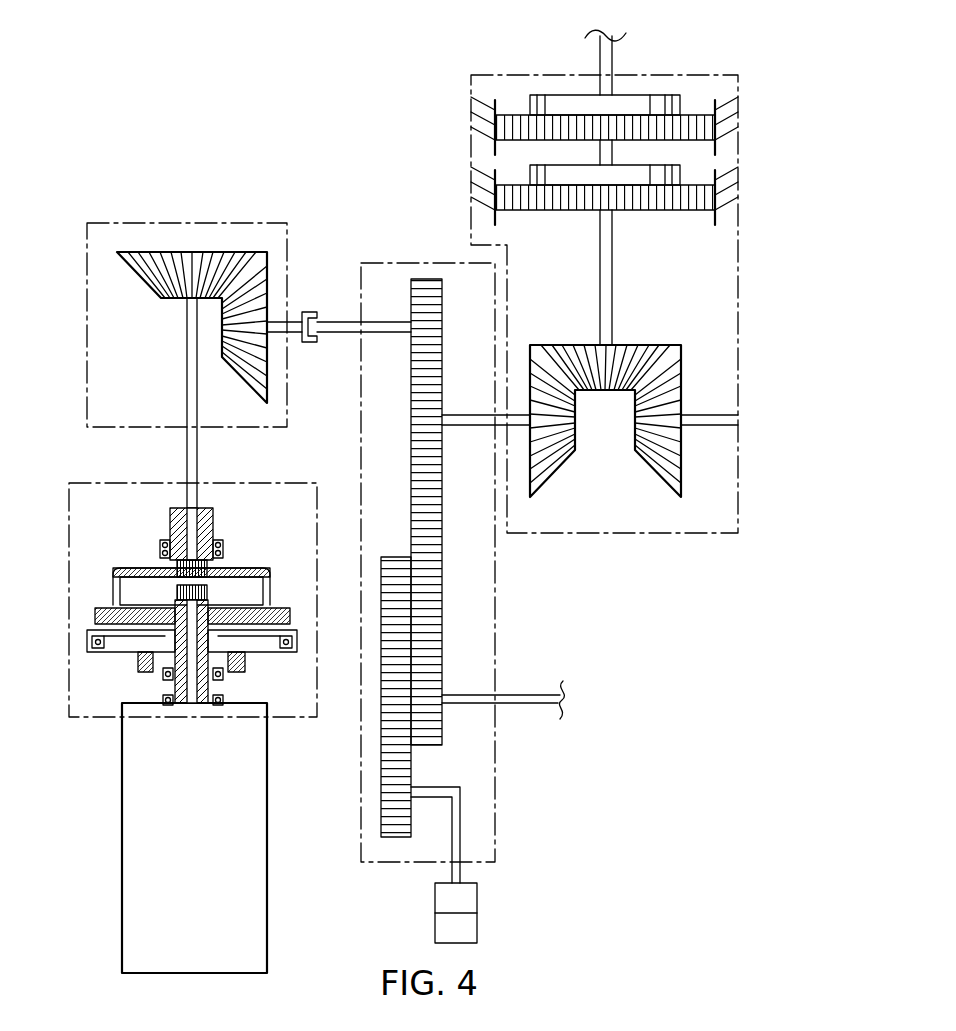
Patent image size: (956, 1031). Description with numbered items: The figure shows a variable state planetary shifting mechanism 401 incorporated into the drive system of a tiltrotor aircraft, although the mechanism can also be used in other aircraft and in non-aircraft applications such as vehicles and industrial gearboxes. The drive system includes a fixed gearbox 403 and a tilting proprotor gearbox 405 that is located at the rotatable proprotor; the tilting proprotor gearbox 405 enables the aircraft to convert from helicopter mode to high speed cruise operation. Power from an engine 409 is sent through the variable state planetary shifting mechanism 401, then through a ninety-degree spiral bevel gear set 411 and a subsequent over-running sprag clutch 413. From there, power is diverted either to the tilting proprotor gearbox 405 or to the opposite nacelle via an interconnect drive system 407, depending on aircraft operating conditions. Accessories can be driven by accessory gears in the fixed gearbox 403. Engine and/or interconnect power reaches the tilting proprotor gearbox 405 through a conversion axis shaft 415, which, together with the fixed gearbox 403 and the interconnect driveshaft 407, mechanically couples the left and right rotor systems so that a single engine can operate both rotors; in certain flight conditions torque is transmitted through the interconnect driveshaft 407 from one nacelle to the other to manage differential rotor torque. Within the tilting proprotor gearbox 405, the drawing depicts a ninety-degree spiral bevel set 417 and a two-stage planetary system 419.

The variable state planetary shifting mechanism 401 is at (127, 551).
The fixed gearbox 403 is at (495, 597).
The tilting proprotor gearbox 405 is at (738, 268).
The interconnect drive system 407 is at (525, 704).
The engine 409 is at (211, 848).
The 90° spiral bevel gear set 411 is at (87, 326).
The over-running sprag clutch 413 is at (310, 311).
The conversion axis shaft 415 is at (465, 414).
The 90° spiral bevel set 417 is at (683, 375).
The two-stage planetary system 419 is at (633, 211).